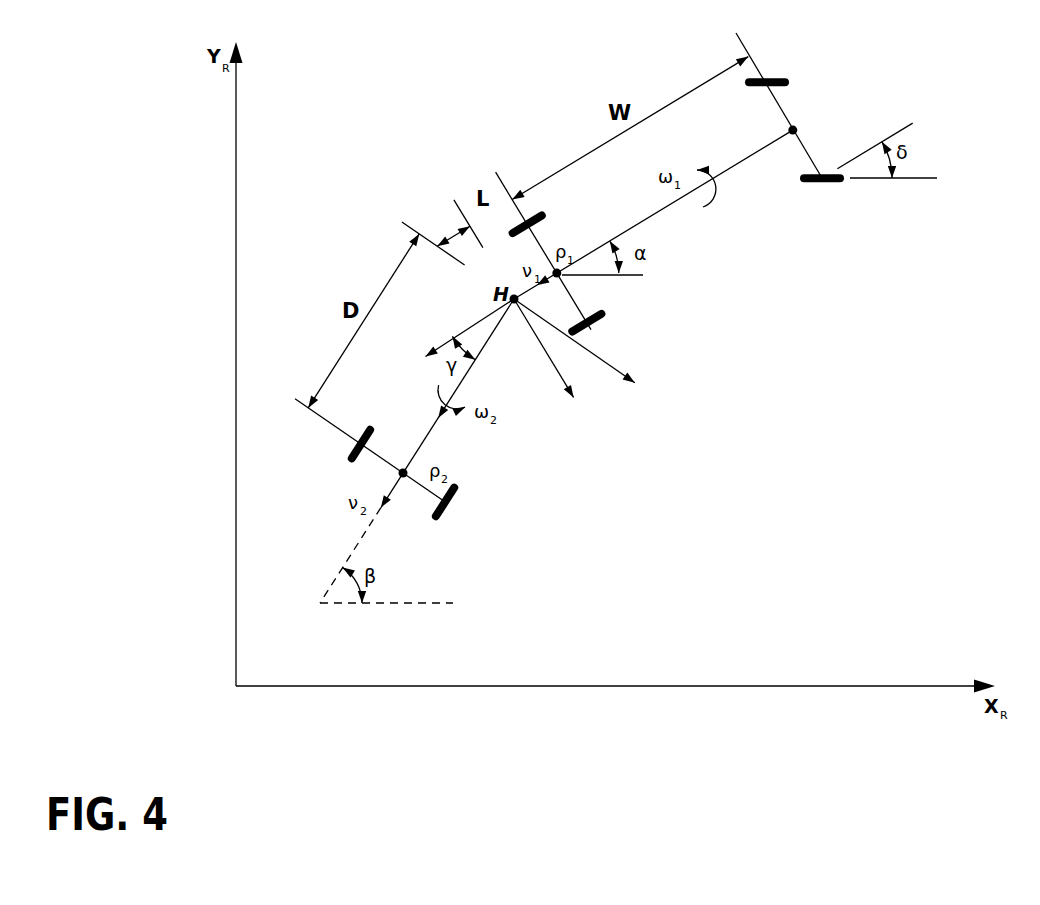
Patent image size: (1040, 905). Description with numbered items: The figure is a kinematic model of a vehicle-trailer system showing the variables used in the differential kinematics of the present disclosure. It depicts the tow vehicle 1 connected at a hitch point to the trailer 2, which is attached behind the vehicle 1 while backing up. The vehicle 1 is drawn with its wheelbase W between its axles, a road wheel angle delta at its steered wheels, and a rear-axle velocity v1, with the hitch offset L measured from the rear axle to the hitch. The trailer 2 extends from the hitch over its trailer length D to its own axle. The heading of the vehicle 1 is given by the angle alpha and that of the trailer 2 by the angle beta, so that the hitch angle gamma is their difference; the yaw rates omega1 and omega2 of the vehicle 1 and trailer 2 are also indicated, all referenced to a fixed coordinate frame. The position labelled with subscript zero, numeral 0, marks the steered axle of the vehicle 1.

The steered front axle (position ρ0) of vehicle 1 0 is at (788, 105).
The vehicle 1 is at (668, 186).
The trailer 2 is at (553, 463).